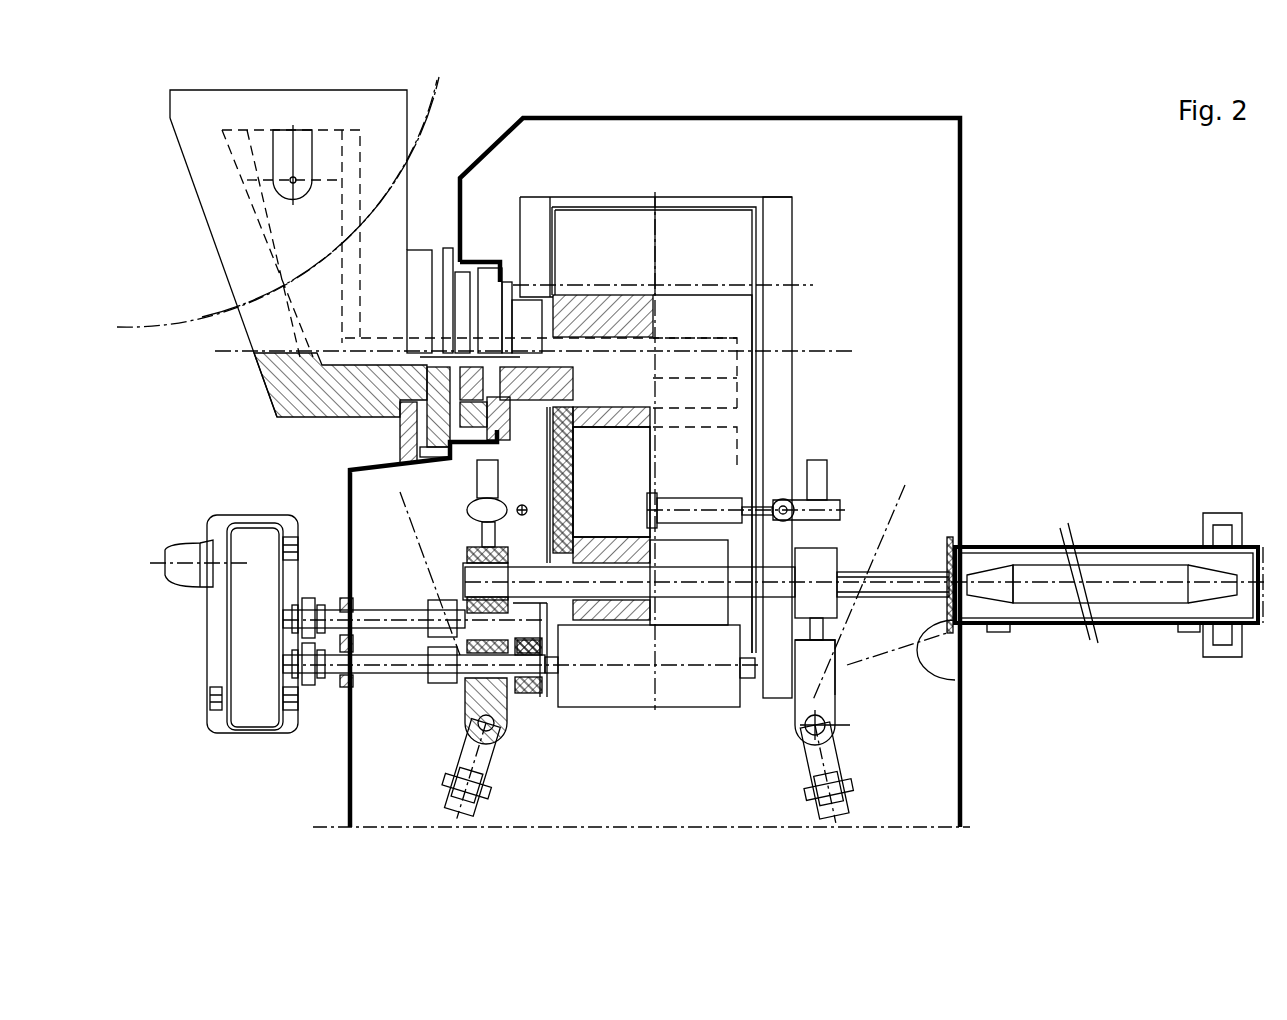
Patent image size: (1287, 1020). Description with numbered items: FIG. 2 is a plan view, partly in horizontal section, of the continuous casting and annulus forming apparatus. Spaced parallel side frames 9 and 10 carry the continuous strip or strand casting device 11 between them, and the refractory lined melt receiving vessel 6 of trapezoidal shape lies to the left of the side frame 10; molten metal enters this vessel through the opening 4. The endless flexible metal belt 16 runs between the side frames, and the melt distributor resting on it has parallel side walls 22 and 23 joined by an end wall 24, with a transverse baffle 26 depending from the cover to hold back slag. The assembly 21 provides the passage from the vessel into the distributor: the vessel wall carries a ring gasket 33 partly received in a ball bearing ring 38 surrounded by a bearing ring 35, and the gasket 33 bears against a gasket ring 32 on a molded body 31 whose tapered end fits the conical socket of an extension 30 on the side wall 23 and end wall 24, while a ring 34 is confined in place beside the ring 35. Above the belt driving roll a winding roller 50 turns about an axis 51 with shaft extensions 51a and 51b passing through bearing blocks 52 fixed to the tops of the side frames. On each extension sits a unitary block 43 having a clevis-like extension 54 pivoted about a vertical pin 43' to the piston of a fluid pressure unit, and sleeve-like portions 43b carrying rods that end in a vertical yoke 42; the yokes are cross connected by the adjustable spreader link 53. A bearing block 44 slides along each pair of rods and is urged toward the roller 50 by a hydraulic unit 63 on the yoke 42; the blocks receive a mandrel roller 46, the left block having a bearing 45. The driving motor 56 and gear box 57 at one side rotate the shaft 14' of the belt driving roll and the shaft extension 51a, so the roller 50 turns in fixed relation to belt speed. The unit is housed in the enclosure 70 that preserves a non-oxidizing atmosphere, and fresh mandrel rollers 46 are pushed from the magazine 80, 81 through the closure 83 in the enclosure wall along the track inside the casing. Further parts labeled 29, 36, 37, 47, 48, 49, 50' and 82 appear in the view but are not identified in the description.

The opening 4 is at (297, 157).
The melt receiving vessel 6 is at (218, 187).
The side frame 9 is at (780, 210).
The side frame 10 is at (535, 207).
The continuous strip or strand casting device 11 is at (685, 203).
The shaft 14' is at (414, 583).
The endless flexible metal belt 16 is at (620, 222).
The passage assembly 21 is at (430, 246).
The side wall 22 is at (743, 397).
The side wall 23 is at (639, 482).
The end wall 24 is at (673, 367).
The transverse baffle 26 is at (720, 415).
The pivot axis direction 29 is at (508, 745).
The extension 30 is at (533, 380).
The molded body 31 is at (465, 377).
The gasket ring 32 is at (400, 380).
The ring gasket 33 is at (330, 362).
The ring 34 is at (478, 480).
The bearing ring 35 is at (455, 430).
The bushing 36 is at (460, 452).
The seal 37 is at (430, 450).
The ball bearing ring 38 is at (400, 430).
The vertical yoke 42 is at (458, 520).
The unitary block 43 is at (855, 667).
The vertical pin 43' is at (732, 769).
The sleeve-like portion 43b is at (800, 705).
The bearing block 44 is at (467, 556).
The bearing 45 is at (470, 580).
The mandrel roller 46 is at (465, 607).
The bearing 47 is at (468, 715).
The bracket 48 is at (470, 680).
The shaft coupling 49 is at (450, 655).
The winding roller 50 is at (656, 703).
The lower shaft 50' is at (521, 678).
The roller axis 51 is at (600, 700).
The shaft extension 51a is at (853, 662).
The shaft extension 51b is at (547, 680).
The bearing block 52 is at (535, 695).
The spreader link 53 is at (713, 494).
The clevis-like extension 54 is at (445, 790).
The driving motor 56 is at (192, 575).
The gear box 57 is at (250, 662).
The hydraulic unit 63 is at (540, 470).
The enclosure 70 is at (957, 322).
The magazine 80 is at (1092, 525).
The magazine 81 is at (1190, 635).
The opening 82 is at (957, 640).
The closure 83 is at (957, 540).